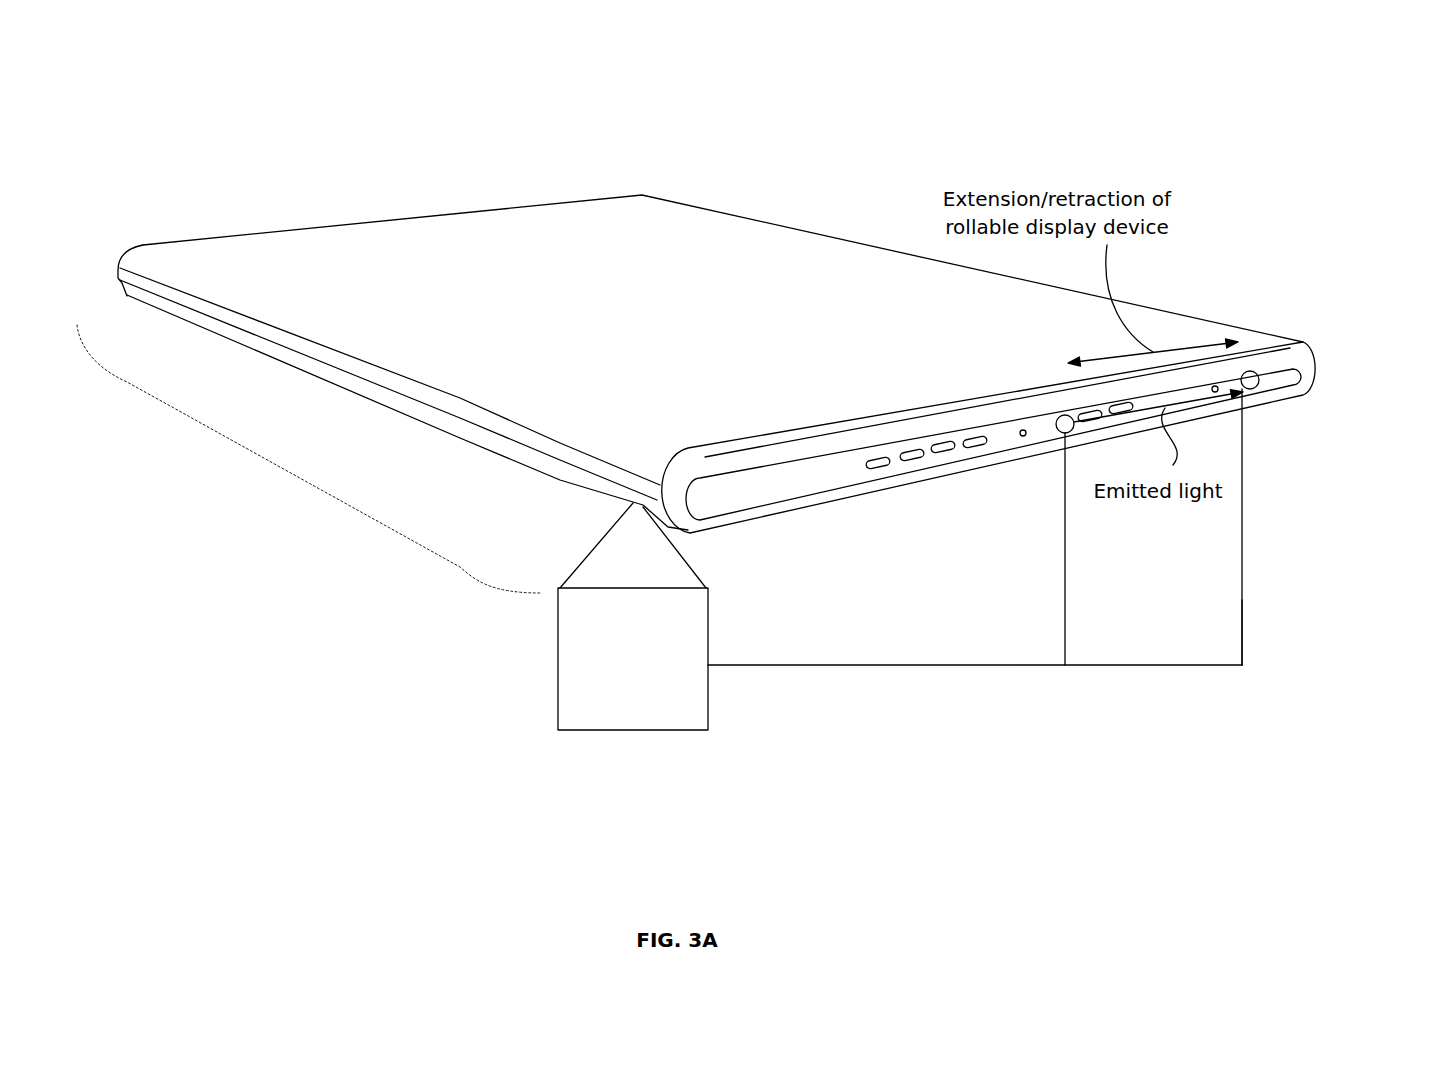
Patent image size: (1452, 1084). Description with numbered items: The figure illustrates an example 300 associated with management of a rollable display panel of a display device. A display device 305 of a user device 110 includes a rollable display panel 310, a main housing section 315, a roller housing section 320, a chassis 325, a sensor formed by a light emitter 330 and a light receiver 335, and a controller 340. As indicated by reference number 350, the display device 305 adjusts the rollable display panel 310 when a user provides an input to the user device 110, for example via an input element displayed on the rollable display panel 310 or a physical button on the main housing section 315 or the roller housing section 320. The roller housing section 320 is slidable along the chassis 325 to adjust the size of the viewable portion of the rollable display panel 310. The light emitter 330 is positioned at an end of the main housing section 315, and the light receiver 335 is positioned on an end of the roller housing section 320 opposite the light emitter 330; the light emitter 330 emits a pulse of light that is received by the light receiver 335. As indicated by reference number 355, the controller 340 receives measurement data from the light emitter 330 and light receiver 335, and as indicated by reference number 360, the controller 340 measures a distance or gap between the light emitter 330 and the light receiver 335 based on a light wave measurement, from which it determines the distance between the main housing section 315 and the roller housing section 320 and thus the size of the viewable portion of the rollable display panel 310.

The example 300 is at (178, 79).
The user device 110 is at (698, 166).
The display device 305 is at (293, 482).
The rollable display panel 310 is at (624, 353).
The main housing section 315 is at (842, 472).
The roller housing section 320 is at (1305, 350).
The chassis 325 is at (1140, 398).
The light emitter 330 is at (1060, 434).
The light receiver 335 is at (1257, 390).
The controller 340 is at (633, 616).
The display device adjusts the rollable display panel 350 is at (488, 191).
The controller receives measurement data from the sensor 355 is at (975, 712).
The controller measures a distance and/or a gap 360 is at (1222, 692).